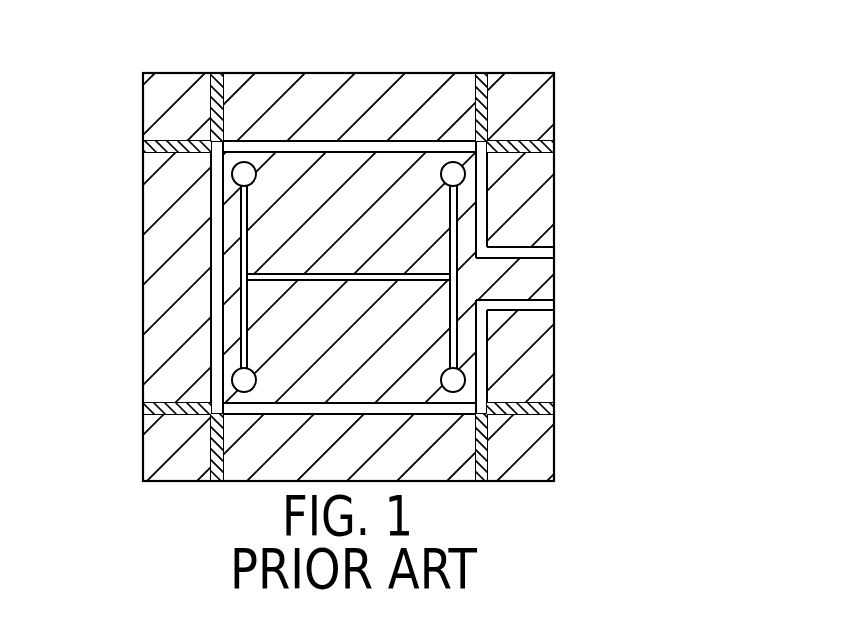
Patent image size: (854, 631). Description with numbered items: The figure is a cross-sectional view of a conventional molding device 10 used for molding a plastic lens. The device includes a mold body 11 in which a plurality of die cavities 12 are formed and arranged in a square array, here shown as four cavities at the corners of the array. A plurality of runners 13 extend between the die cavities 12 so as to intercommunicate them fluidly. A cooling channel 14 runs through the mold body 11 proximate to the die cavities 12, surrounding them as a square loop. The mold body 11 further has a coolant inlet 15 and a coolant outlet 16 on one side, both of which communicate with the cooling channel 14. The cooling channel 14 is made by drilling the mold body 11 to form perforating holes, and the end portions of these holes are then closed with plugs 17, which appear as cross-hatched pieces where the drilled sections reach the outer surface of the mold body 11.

The molding device 10 is at (572, 112).
The mold body 11 is at (556, 84).
The die cavities 12 is at (242, 378).
The runners 13 is at (243, 219).
The cooling channel 14 is at (360, 141).
The coolant inlet 15 is at (530, 252).
The coolant outlet 16 is at (530, 303).
The plugs 17 is at (479, 77).